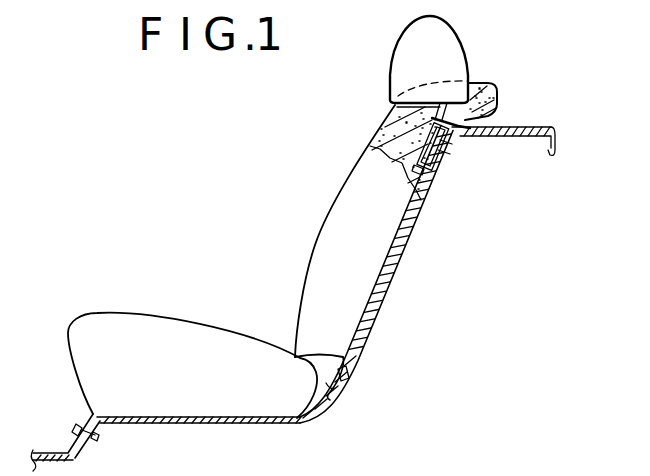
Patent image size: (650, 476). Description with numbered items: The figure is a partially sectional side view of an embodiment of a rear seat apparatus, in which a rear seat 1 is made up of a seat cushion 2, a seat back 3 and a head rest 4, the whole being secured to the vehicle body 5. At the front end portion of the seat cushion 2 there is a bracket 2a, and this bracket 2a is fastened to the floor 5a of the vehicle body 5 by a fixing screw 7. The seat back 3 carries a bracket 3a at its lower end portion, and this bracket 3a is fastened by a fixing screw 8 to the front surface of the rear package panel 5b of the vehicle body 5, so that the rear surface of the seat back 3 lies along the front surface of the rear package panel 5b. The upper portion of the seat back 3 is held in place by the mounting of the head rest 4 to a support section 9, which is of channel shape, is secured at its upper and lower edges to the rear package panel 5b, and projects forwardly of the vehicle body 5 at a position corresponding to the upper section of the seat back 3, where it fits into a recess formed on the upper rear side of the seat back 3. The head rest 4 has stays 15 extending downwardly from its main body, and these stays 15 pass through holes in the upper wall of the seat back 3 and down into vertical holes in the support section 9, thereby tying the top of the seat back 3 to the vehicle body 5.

The rear seat 1 is at (260, 208).
The seat cushion 2 is at (188, 318).
The bracket 2a is at (88, 415).
The seat back 3 is at (350, 210).
The bracket 3a is at (333, 403).
The head rest 4 is at (402, 72).
The vehicle body 5 is at (283, 299).
The floor 5a is at (188, 424).
The rear package panel 5b is at (403, 256).
The fixing screw 7 is at (72, 430).
The fixing screw 8 is at (350, 372).
The support section 9 is at (440, 155).
The stays 15 is at (460, 138).